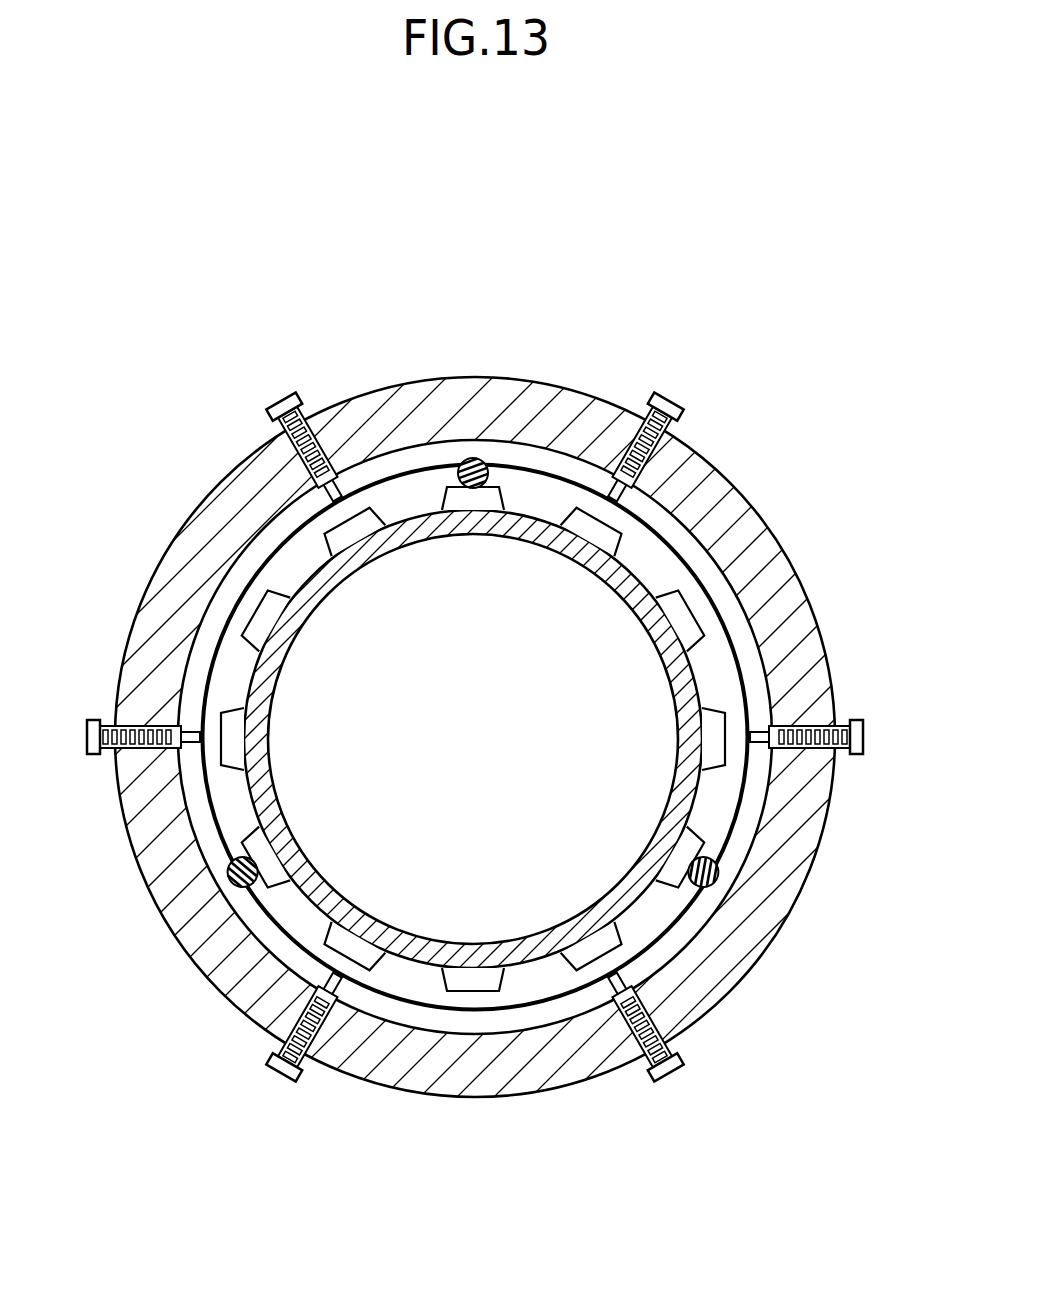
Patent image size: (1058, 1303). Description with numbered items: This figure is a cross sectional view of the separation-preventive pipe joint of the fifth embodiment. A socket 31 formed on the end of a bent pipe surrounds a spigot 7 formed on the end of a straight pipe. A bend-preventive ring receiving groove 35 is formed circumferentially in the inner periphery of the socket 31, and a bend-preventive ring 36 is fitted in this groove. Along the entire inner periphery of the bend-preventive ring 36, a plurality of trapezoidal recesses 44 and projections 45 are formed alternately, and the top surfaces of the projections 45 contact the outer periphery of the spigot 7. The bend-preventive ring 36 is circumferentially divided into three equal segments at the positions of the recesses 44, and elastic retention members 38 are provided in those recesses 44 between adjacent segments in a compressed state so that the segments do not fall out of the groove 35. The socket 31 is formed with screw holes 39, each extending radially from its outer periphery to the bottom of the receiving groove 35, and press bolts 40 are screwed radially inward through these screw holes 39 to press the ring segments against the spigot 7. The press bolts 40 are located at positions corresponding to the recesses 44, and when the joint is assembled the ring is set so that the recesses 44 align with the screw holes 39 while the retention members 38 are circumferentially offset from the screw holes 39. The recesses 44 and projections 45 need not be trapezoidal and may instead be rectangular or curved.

The spigot 7 is at (265, 731).
The socket 31 is at (470, 386).
The bend-preventive ring receiving groove 35 is at (693, 558).
The bend-preventive ring 36 is at (715, 642).
The retention member 38 is at (490, 455).
The screw hole 39 is at (340, 441).
The press bolt 40 is at (292, 398).
The recess 44 is at (358, 528).
The projection 45 is at (293, 557).